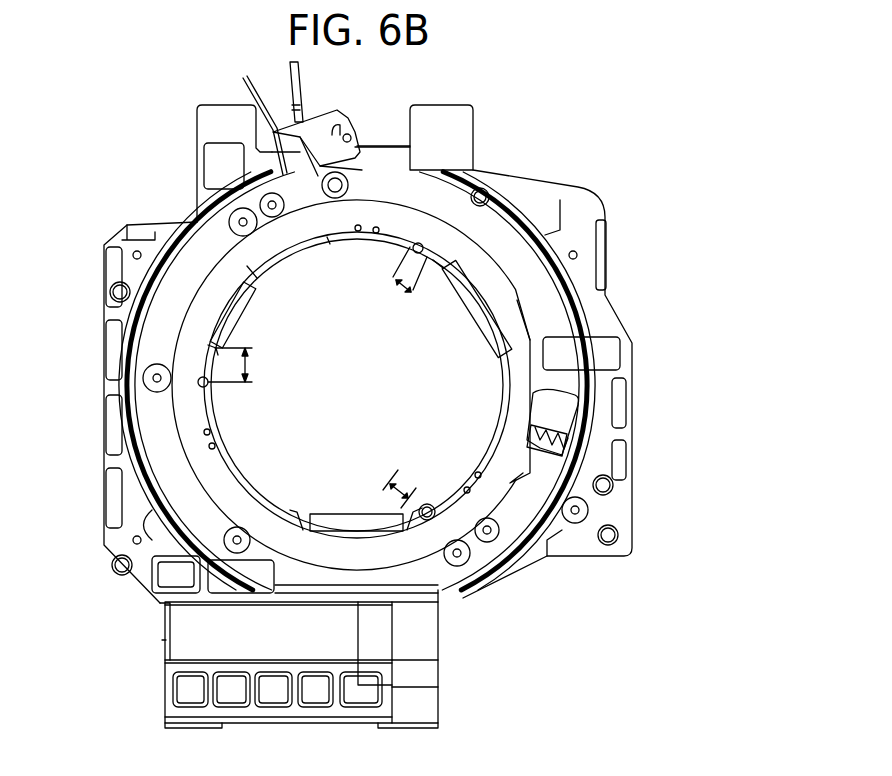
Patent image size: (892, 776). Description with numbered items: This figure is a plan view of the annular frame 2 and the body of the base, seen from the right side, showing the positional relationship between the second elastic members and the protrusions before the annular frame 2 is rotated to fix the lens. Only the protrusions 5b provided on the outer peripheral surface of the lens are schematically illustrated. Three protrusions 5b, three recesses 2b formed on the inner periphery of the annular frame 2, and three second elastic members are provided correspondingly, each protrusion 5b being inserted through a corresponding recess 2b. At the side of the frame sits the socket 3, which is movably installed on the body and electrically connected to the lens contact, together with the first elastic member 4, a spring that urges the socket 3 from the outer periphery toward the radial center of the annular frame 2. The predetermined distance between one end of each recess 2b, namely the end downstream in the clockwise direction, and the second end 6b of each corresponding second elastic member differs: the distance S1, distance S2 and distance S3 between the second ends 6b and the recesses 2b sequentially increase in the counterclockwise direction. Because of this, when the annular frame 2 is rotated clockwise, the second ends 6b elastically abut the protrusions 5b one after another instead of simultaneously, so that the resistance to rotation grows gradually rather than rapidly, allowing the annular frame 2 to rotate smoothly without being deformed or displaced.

The annular frame 2 is at (190, 410).
The recess 2b is at (228, 300).
The protrusion 5b is at (483, 314).
The socket 3 is at (553, 413).
The first elastic member 4 is at (562, 448).
The second end 6b is at (430, 515).
The distance S1 is at (391, 479).
The distance S2 is at (399, 284).
The distance S3 is at (253, 366).